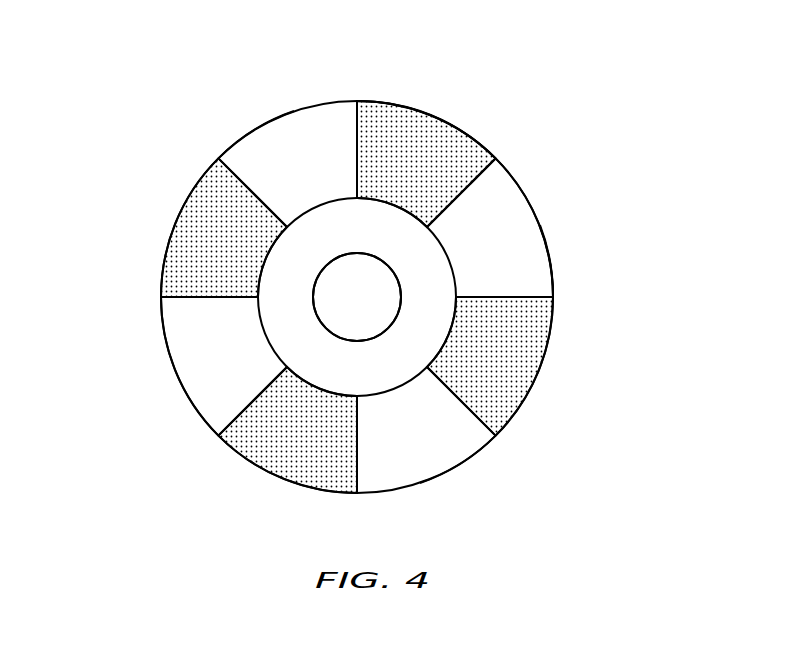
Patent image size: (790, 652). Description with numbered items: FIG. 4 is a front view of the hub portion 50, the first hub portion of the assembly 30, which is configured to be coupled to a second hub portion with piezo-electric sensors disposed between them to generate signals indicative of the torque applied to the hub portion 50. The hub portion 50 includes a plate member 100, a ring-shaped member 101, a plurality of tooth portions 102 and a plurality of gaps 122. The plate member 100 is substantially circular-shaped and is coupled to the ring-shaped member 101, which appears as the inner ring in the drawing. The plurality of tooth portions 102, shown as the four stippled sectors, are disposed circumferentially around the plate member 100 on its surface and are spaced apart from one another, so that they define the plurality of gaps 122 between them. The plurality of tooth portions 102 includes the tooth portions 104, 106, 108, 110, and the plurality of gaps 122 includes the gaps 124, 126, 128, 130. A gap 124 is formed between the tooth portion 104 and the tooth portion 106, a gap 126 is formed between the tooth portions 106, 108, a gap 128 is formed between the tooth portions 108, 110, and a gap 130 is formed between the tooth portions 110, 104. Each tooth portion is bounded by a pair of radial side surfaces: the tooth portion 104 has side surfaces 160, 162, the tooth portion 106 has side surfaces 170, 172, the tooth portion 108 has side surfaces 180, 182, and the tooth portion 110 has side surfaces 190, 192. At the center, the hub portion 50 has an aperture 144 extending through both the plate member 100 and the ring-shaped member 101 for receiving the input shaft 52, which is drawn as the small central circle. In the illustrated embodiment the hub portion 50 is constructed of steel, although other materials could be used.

The rotor assembly 30 is at (434, 69).
The hub portion 50 is at (446, 109).
The input shaft 52 is at (357, 316).
The plate member 100 is at (556, 343).
The ring-shaped member 101 is at (378, 373).
The plurality of tooth portions 102 is at (481, 138).
The tooth portion 104 is at (493, 146).
The tooth portion 106 is at (536, 379).
The tooth portion 108 is at (268, 473).
The tooth portion 110 is at (177, 222).
The plurality of gaps 122 is at (539, 215).
The gap 124 is at (550, 258).
The gap 126 is at (483, 448).
The gap 128 is at (185, 392).
The gap 130 is at (253, 130).
The aperture 144 is at (336, 257).
The side surface 160 is at (355, 142).
The side surface 162 is at (453, 205).
The side surface 170 is at (474, 296).
The side surface 172 is at (475, 416).
The side surface 180 is at (362, 470).
The side surface 182 is at (240, 415).
The side surface 190 is at (207, 298).
The side surface 192 is at (257, 193).